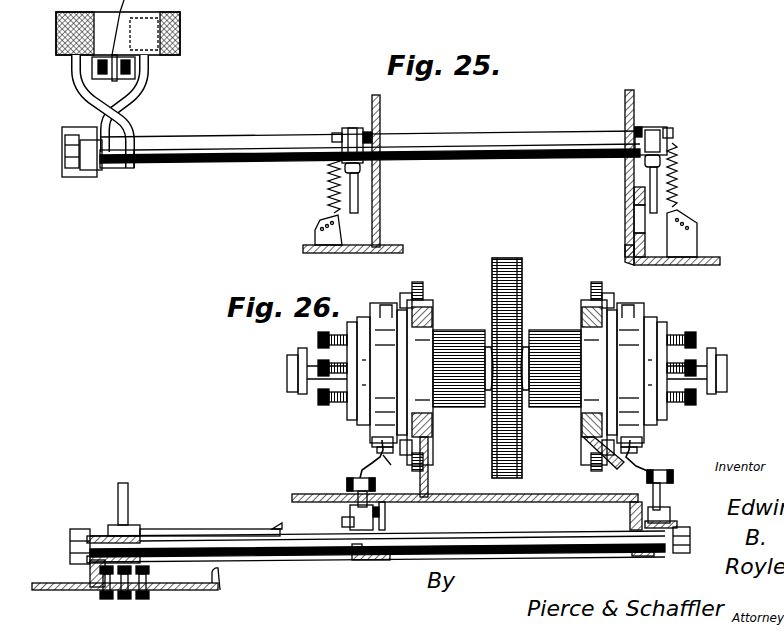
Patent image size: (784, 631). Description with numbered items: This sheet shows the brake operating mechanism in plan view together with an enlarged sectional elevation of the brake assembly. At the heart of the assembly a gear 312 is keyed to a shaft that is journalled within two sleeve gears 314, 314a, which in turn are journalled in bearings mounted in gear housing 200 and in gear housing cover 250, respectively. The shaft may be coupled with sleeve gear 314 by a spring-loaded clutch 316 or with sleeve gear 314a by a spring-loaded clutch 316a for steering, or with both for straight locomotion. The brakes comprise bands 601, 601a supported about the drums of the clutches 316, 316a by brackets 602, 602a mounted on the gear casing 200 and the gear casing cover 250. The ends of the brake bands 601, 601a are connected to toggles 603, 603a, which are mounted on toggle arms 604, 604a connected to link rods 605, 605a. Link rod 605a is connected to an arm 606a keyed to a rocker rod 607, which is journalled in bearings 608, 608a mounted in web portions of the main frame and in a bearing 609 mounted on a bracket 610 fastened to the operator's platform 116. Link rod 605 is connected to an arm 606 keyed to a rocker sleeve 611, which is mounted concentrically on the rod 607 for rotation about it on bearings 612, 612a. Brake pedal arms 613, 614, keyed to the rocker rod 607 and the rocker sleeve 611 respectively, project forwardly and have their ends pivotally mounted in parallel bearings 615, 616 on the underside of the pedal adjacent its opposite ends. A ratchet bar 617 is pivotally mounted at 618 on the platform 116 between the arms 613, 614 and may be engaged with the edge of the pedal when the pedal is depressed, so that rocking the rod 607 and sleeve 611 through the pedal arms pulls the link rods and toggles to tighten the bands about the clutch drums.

In FIG. 25, the operator's platform 116 is at (323, 6).
In FIG. 26, the operator's platform 116 is at (176, 590).
In FIG. 26, the gear housing 200 is at (422, 294).
In FIG. 26, the gear housing cover 250 is at (592, 272).
In FIG. 26, the gear 312 is at (520, 266).
In FIG. 26, the sleeve gear 314 is at (458, 333).
In FIG. 26, the sleeve gear 314a is at (550, 333).
In FIG. 26, the spring-loaded clutch 316 is at (366, 316).
In FIG. 26, the spring-loaded clutch 316a is at (652, 312).
In FIG. 26, the brake band 601 is at (372, 437).
In FIG. 26, the brake band 601a is at (642, 433).
In FIG. 26, the bracket 602 is at (386, 303).
In FIG. 26, the bracket 602a is at (624, 303).
In FIG. 26, the toggle 603 is at (375, 449).
In FIG. 26, the toggle 603a is at (638, 447).
In FIG. 26, the toggle arm 604 is at (389, 462).
In FIG. 26, the toggle arm 604a is at (640, 468).
In FIG. 25, the link rod 605 is at (352, 195).
In FIG. 26, the link rod 605 is at (352, 510).
In FIG. 25, the link rod 605a is at (656, 183).
In FIG. 26, the link rod 605a is at (663, 476).
In FIG. 25, the arm 606 is at (358, 116).
In FIG. 26, the arm 606 is at (385, 515).
In FIG. 25, the arm 606a is at (653, 136).
In FIG. 26, the arm 606a is at (662, 506).
In FIG. 25, the rocker rod 607 is at (532, 126).
In FIG. 26, the rocker rod 607 is at (572, 530).
In FIG. 25, the bearing 608 is at (373, 136).
In FIG. 26, the bearing 608 is at (380, 561).
In FIG. 25, the bearing 608a is at (626, 133).
In FIG. 26, the bearing 608a is at (640, 530).
In FIG. 26, the bearing 609 is at (114, 528).
In FIG. 25, the bracket 610 is at (72, 178).
In FIG. 26, the bracket 610 is at (72, 576).
In FIG. 26, the rocker sleeve 611 is at (258, 528).
In FIG. 26, the bearing 612 is at (122, 598).
In FIG. 26, the bearing 612a is at (356, 561).
In FIG. 25, the brake pedal arm 613 is at (136, 87).
In FIG. 25, the brake pedal arm 614 is at (97, 90).
In FIG. 25, the bearing 615 is at (180, 42).
In FIG. 25, the bearing 616 is at (56, 40).
In FIG. 25, the ratchet bar 617 is at (128, 6).
In FIG. 26, the ratchet bar 617 is at (129, 500).
In FIG. 25, the pivot 618 is at (233, 10).